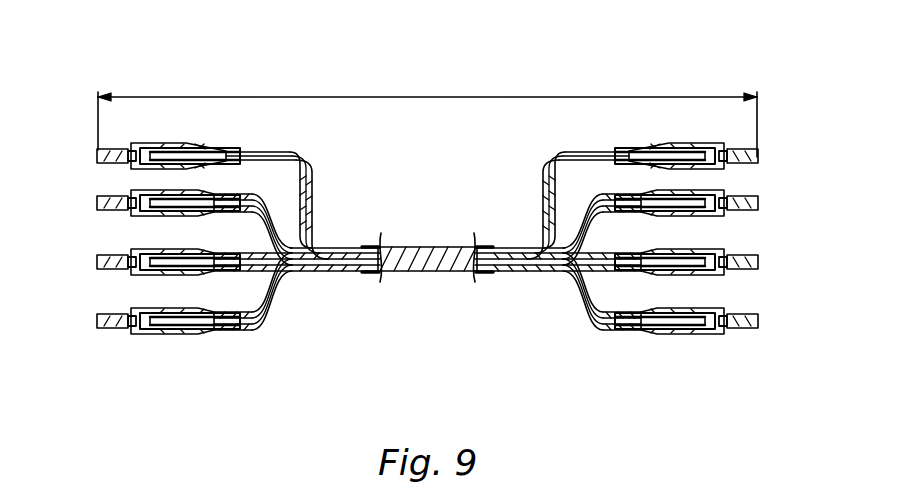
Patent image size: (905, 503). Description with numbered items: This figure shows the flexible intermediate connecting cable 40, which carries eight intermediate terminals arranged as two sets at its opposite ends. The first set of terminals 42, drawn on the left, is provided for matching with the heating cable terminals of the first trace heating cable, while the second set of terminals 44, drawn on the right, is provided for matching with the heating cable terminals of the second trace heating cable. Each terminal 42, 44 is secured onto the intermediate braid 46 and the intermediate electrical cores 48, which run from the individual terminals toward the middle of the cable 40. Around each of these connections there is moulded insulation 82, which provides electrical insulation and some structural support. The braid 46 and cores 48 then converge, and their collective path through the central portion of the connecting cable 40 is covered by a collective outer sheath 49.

The flexible intermediate connecting cable 40 is at (426, 209).
The first set of intermediate terminals 42 is at (97, 163).
The second set of intermediate terminals 44 is at (758, 163).
The intermediate braid 46 is at (267, 285).
The intermediate electrical cores 48 is at (313, 160).
The collective outer sheath 49 is at (433, 283).
The moulded insulation 82 is at (195, 338).